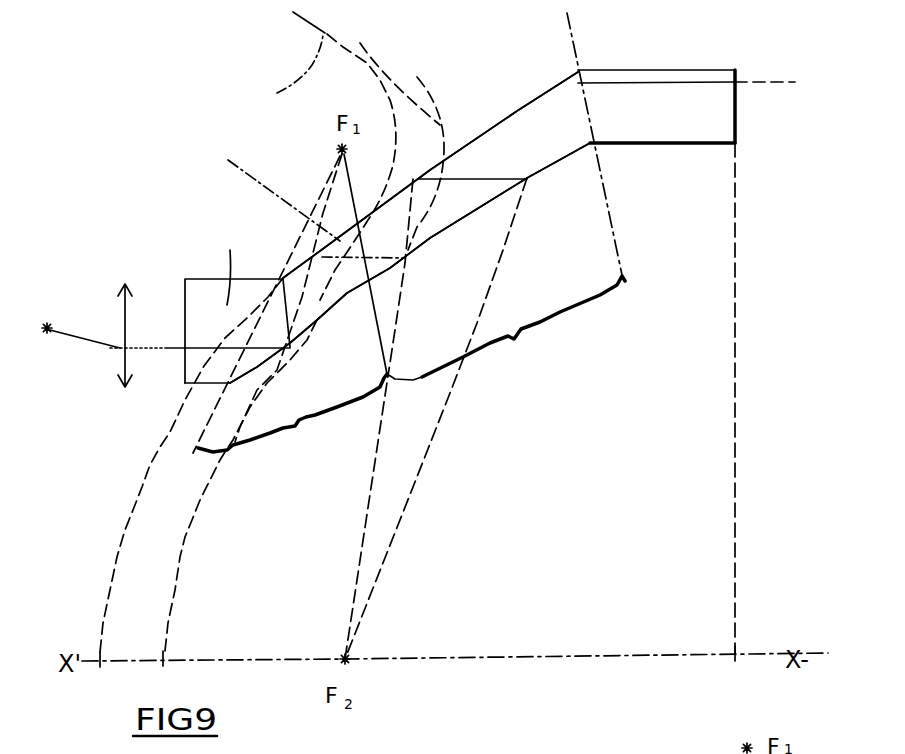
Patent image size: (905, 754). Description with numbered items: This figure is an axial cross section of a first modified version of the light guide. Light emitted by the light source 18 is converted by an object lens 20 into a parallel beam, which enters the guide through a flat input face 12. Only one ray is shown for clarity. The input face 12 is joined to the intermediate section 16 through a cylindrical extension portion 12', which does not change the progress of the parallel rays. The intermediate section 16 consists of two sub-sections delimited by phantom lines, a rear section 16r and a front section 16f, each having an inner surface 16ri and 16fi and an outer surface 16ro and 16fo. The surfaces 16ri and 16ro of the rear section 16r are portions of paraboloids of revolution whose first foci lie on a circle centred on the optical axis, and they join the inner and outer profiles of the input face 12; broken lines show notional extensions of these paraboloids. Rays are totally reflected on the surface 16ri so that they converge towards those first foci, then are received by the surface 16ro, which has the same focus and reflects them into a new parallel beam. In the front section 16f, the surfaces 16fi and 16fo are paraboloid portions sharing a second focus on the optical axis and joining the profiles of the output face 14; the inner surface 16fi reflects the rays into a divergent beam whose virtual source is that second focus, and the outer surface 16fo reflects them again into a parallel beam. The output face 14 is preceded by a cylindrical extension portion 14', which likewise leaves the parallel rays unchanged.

The input face 12 is at (212, 291).
The cylindrical extension portion 12' is at (213, 252).
The output face 14 is at (686, 120).
The cylindrical extension portion 14' is at (662, 154).
The intermediate section 16 is at (465, 104).
The front section 16f is at (516, 336).
The inner surface of front section 16fi is at (460, 226).
The outer surface of front section 16fo is at (516, 111).
The rear section 16r is at (298, 428).
The inner surface of rear section 16ri is at (140, 423).
The outer surface of rear section 16ro is at (277, 93).
The light source 18 is at (49, 325).
The object lens 20 is at (120, 358).